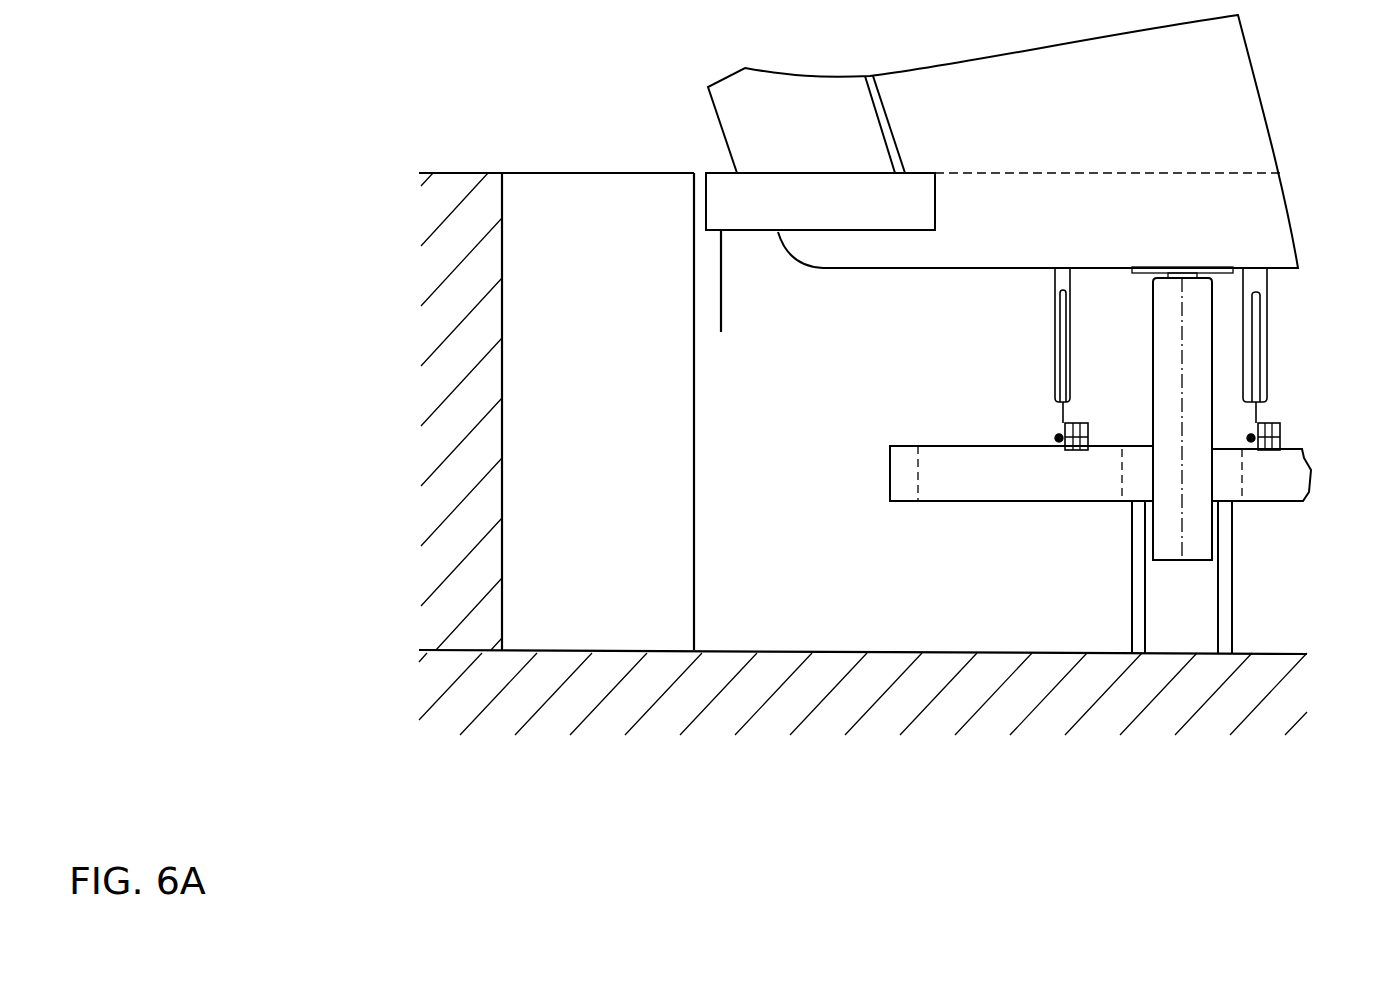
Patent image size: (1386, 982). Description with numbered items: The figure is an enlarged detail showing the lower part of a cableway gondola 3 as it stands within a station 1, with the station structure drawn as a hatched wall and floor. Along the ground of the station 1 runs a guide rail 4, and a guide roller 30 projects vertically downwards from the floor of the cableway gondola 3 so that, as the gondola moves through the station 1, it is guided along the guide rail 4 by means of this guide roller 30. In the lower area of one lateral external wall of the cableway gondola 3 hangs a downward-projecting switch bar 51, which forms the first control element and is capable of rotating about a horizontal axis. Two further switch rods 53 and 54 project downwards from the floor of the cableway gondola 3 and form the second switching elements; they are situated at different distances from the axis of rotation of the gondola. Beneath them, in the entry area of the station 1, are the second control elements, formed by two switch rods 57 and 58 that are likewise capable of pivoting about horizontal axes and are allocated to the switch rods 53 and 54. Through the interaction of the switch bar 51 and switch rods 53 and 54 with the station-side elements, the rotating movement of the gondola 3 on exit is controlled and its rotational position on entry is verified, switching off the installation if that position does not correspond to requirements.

The station 1 is at (341, 470).
The cableway gondola 3 is at (1090, 121).
The guide rail 4 is at (1130, 600).
The guide roller 30 is at (1193, 543).
The switch bar 51 is at (724, 306).
The switch rod 53 is at (1267, 337).
The switch rod 54 is at (1057, 343).
The switch rod 57 is at (1263, 413).
The switch rod 58 is at (1061, 418).